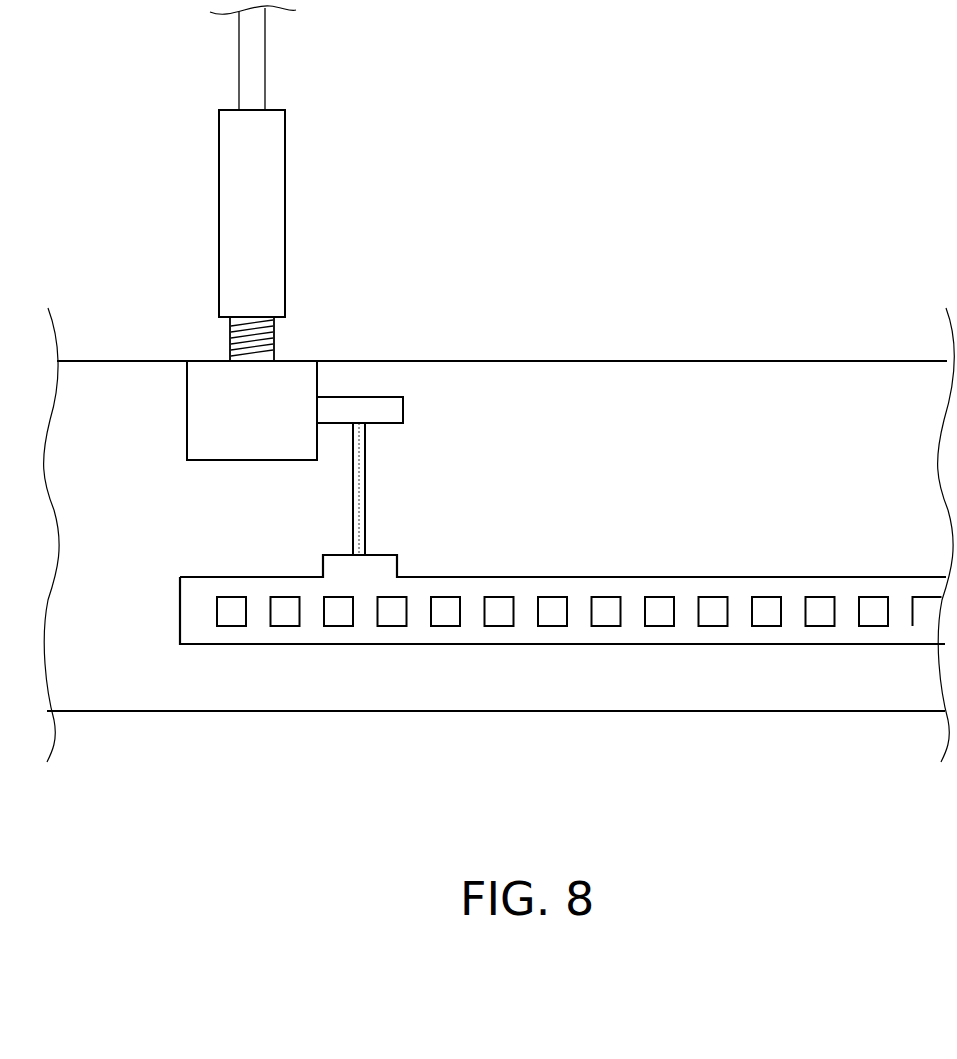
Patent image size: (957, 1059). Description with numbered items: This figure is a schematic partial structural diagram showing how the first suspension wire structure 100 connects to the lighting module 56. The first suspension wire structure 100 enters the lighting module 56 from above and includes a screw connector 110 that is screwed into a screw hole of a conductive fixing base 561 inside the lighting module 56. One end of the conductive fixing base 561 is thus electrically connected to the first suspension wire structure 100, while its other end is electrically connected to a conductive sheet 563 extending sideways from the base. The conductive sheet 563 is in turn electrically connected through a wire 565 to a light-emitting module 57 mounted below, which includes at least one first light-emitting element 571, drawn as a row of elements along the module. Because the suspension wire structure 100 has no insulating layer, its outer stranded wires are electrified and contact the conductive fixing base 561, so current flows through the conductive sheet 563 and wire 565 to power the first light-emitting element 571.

The first suspension wire structure 100 is at (278, 61).
The screw connector 110 is at (276, 339).
The lighting module 56 is at (125, 712).
The conductive fixing base 561 is at (215, 412).
The conductive sheet 563 is at (404, 412).
The wire 565 is at (366, 495).
The light-emitting module 57 is at (365, 645).
The first light-emitting element 571 is at (553, 622).